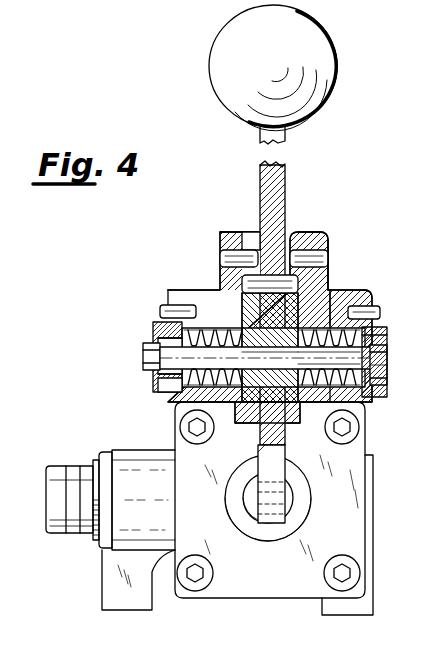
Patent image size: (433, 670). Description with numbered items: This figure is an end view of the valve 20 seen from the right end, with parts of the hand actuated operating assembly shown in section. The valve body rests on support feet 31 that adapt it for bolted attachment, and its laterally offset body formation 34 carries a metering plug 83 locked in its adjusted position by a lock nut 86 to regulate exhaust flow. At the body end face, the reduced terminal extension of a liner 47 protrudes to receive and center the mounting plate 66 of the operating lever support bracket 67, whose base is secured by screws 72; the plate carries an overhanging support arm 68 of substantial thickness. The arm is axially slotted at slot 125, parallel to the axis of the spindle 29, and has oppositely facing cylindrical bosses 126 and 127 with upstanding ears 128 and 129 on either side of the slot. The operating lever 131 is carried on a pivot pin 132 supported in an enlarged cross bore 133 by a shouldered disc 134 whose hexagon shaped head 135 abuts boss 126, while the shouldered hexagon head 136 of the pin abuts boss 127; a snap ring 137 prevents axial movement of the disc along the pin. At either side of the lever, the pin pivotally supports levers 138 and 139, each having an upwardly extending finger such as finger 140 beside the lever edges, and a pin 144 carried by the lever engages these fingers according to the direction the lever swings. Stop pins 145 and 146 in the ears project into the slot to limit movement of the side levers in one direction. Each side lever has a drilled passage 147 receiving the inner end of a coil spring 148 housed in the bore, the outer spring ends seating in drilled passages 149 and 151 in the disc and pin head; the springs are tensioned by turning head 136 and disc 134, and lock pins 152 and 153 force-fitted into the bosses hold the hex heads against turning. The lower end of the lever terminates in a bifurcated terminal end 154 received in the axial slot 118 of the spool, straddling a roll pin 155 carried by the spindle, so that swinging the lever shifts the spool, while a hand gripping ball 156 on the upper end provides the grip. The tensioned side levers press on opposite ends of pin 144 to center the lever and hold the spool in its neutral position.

The hand gripping ball 156 is at (217, 45).
The operating lever 131 is at (285, 166).
The finger 140 is at (252, 232).
The ear 128 is at (222, 236).
The stop pin 145 is at (221, 254).
The stop pin 146 is at (296, 252).
The support arm 68 is at (305, 240).
The ear 129 is at (328, 248).
The pin 144 is at (270, 284).
The operating lever support bracket 67 is at (205, 288).
The cylindrical boss 126 is at (168, 292).
The cylindrical boss 127 is at (360, 296).
The coil spring 148 is at (334, 296).
The lock pin 152 is at (162, 310).
The lock pin 153 is at (370, 308).
The drilled passage 151 is at (153, 326).
The hexagon shaped head 135 is at (158, 343).
The snap ring 137 is at (143, 356).
The shouldered disc 134 is at (165, 366).
The cross bore 133 is at (158, 386).
The slot 125 is at (300, 368).
The pivot pin 132 is at (270, 355).
The drilled passage 147 is at (250, 340).
The shouldered hexagon head 136 is at (382, 325).
The drilled passage 149 is at (388, 332).
The mounting plate 66 is at (275, 598).
The screws 72 is at (200, 446).
The lever 138 is at (246, 423).
The lever 139 is at (290, 423).
The spindle 29 is at (290, 490).
The roll pin 155 is at (247, 500).
The bifurcated terminal end 154 is at (280, 512).
The axial slot 118 is at (252, 520).
The liner 47 is at (268, 541).
The body formation 34 is at (160, 450).
The metering plug 83 is at (80, 466).
The lock nut 86 is at (96, 538).
The support feet 31 is at (108, 610).
The valve 20 is at (246, 606).